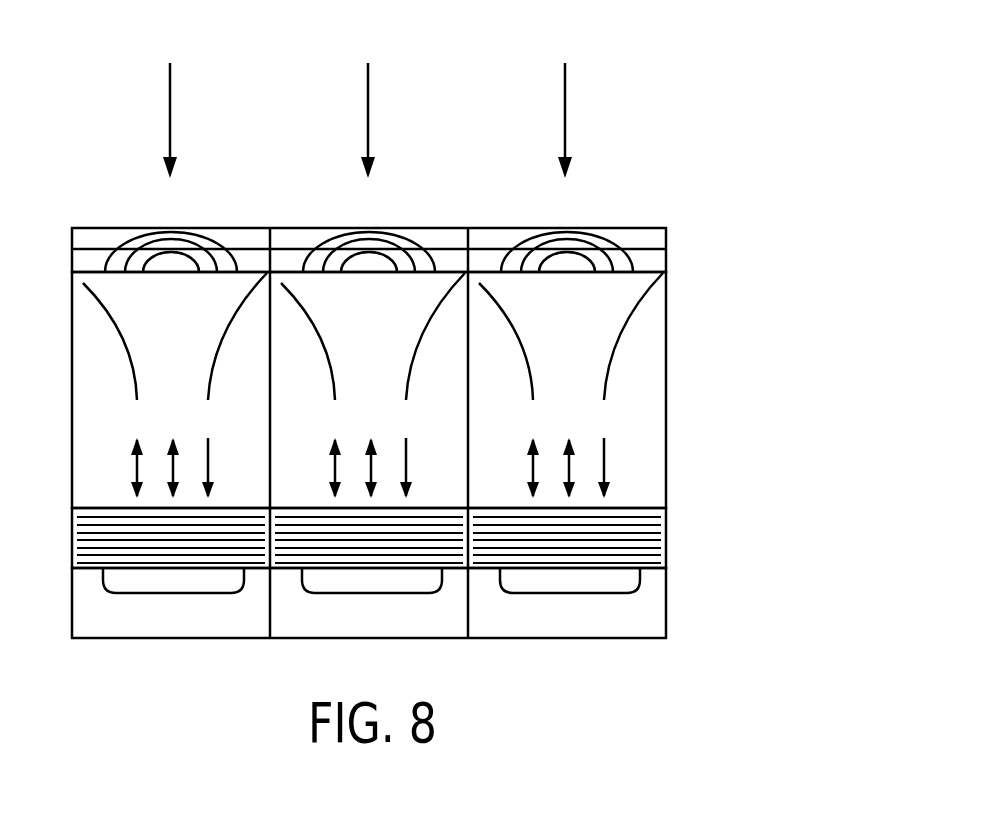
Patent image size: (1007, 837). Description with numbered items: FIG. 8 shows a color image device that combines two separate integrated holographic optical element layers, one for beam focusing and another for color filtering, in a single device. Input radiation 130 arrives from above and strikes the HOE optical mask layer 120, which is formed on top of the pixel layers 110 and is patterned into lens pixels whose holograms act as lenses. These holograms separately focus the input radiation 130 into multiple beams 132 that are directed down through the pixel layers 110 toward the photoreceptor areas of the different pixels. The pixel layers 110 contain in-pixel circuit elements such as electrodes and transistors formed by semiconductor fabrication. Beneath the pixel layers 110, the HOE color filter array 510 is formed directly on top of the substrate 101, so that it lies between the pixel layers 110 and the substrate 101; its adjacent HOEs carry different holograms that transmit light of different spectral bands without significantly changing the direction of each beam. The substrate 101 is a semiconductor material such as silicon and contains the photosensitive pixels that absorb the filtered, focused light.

The input radiation 130 is at (565, 110).
The HOE optical mask layer 120 is at (667, 255).
The pixel layers 110 is at (462, 433).
The beams 132 is at (132, 348).
The HOE color filter array 510 is at (667, 537).
The substrate 101 is at (667, 602).